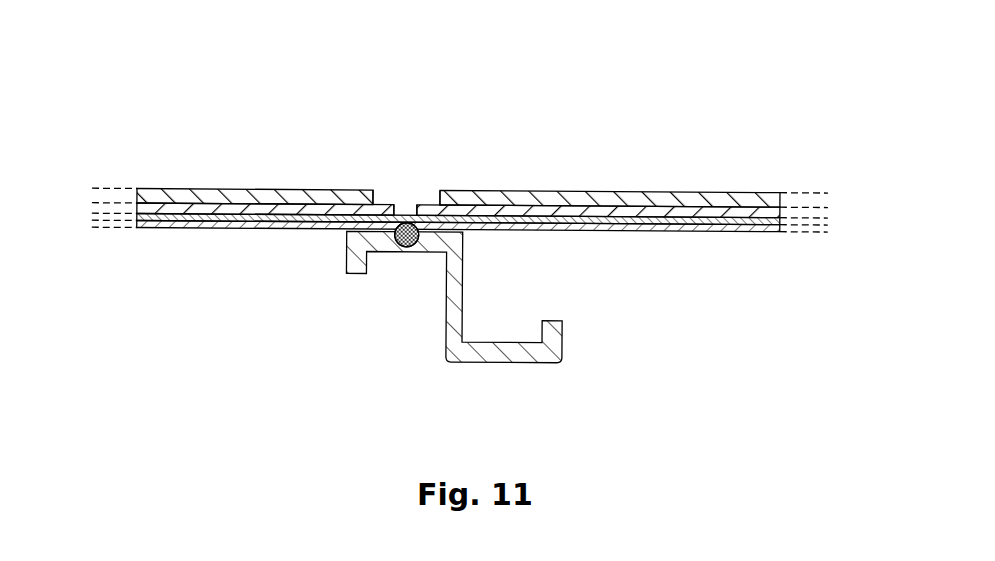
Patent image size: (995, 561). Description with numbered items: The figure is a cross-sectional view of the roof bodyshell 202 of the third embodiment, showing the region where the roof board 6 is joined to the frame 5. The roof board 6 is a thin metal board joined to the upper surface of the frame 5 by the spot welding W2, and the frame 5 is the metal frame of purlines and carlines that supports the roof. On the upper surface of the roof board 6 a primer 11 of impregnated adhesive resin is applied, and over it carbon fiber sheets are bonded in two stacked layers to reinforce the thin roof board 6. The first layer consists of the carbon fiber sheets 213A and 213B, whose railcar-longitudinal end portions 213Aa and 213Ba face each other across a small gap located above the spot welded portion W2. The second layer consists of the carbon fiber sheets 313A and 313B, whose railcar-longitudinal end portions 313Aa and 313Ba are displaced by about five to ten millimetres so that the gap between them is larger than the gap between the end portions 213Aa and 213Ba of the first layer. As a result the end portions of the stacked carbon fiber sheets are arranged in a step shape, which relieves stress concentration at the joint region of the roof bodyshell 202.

The roof bodyshell 202 is at (192, 140).
The carbon fiber sheet 313A is at (288, 196).
The carbon fiber sheet 313B is at (682, 197).
The railcar-longitudinal end portion 313Aa is at (379, 193).
The railcar-longitudinal end portion 313Ba is at (438, 198).
The carbon fiber sheet 213A is at (236, 207).
The carbon fiber sheet 213B is at (580, 207).
The railcar-longitudinal end portion 213Aa is at (398, 205).
The railcar-longitudinal end portion 213Ba is at (418, 208).
The primer 11 is at (597, 223).
The roof board 6 is at (686, 230).
The frame 5 is at (446, 336).
The spot welding W2 is at (402, 247).